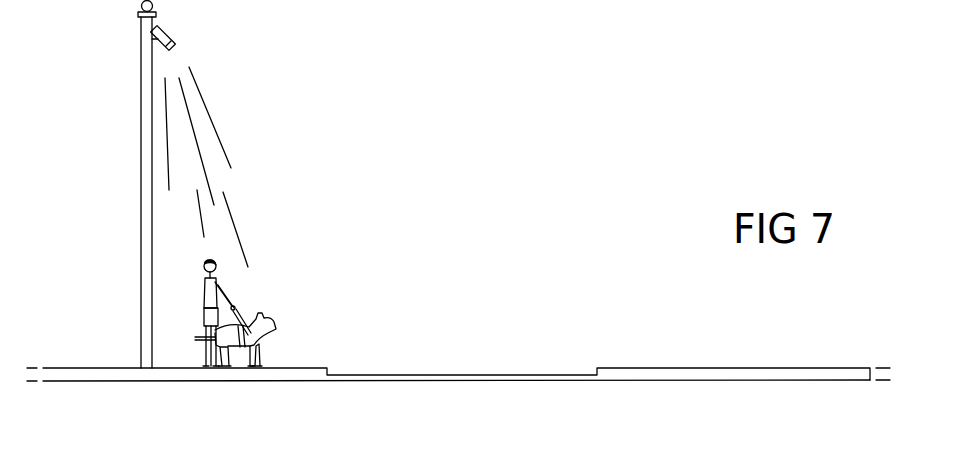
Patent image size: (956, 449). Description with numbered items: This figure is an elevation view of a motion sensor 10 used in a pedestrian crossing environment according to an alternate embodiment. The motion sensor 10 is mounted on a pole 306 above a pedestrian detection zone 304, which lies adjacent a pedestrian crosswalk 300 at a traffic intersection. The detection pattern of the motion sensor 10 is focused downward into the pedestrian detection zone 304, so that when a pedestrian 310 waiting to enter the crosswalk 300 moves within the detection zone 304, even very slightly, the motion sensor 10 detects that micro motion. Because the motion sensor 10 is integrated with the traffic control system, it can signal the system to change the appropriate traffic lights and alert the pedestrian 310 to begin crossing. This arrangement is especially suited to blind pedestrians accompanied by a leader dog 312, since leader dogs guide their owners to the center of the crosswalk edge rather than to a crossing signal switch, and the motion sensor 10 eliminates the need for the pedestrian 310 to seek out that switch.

The motion sensor 10 is at (170, 41).
The pedestrian crosswalk 300 is at (428, 332).
The pedestrian detection zone 304 is at (275, 275).
The pole 306 is at (143, 155).
The pedestrian 310 is at (207, 292).
The leader dog 312 is at (273, 330).